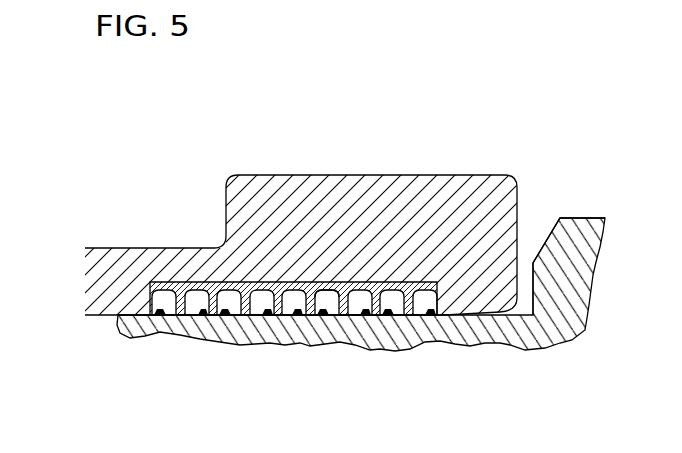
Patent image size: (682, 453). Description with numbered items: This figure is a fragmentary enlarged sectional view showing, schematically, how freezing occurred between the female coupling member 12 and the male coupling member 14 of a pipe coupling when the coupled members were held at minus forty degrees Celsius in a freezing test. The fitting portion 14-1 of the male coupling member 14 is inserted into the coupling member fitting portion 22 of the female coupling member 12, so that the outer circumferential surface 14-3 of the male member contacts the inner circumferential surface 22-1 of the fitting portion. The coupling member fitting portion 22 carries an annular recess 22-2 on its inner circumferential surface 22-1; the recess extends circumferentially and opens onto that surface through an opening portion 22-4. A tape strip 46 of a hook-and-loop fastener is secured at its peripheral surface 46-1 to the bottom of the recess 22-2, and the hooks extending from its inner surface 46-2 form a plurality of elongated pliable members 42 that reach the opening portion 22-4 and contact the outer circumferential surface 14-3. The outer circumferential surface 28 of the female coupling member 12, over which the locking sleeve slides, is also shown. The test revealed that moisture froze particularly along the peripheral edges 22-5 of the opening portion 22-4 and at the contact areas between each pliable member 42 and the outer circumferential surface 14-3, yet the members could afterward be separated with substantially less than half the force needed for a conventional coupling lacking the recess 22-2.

The female coupling member 12 is at (452, 170).
The male coupling member 14 is at (588, 208).
The fitting portion 14-1 is at (488, 310).
The outer circumferential surface 14-3 is at (270, 316).
The coupling member fitting portion 22 is at (415, 158).
The inner circumferential surface 22-1 is at (148, 320).
The annular recess 22-2 is at (323, 290).
The opening portion 22-4 is at (297, 318).
The peripheral edges 22-5 is at (158, 318).
The outer circumferential surface 28 is at (97, 248).
The pliable members 42 is at (185, 286).
The tape strip 46 is at (285, 194).
The peripheral surface 46-1 is at (226, 292).
The inner surface 46-2 is at (213, 288).